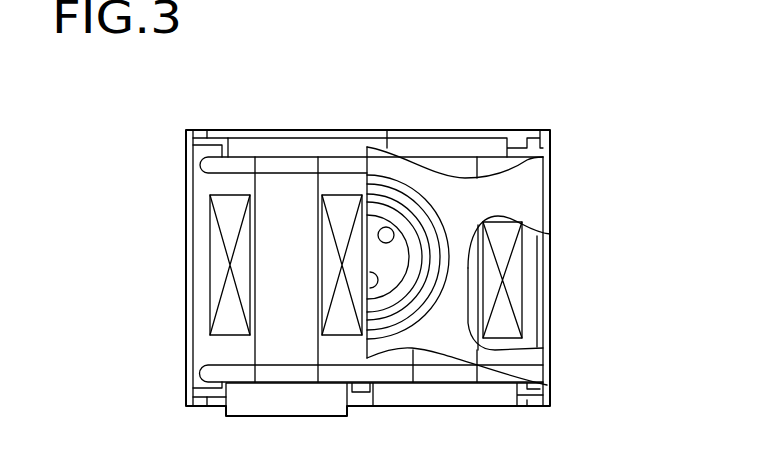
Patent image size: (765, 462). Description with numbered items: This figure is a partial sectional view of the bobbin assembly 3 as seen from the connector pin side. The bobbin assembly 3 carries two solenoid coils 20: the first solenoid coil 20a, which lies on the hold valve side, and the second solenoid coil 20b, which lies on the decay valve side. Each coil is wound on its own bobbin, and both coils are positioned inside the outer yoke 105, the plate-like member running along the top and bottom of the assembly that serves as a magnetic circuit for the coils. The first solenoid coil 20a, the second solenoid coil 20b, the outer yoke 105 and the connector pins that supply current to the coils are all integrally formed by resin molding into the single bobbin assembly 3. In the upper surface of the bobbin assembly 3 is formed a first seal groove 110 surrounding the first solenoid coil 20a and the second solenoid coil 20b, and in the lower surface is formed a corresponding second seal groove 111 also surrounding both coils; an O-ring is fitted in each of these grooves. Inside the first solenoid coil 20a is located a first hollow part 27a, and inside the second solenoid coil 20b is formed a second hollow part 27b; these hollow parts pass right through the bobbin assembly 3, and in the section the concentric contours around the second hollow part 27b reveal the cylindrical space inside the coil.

The bobbin assembly 3 is at (568, 203).
The first seal groove 110 is at (205, 128).
The second seal groove 111 is at (192, 404).
The outer yoke 105 is at (235, 162).
The solenoid coil 20 is at (372, 266).
The first solenoid coil 20a is at (513, 278).
The second solenoid coil 20b is at (213, 227).
The first hollow part 27a is at (440, 357).
The second hollow part 27b is at (292, 197).